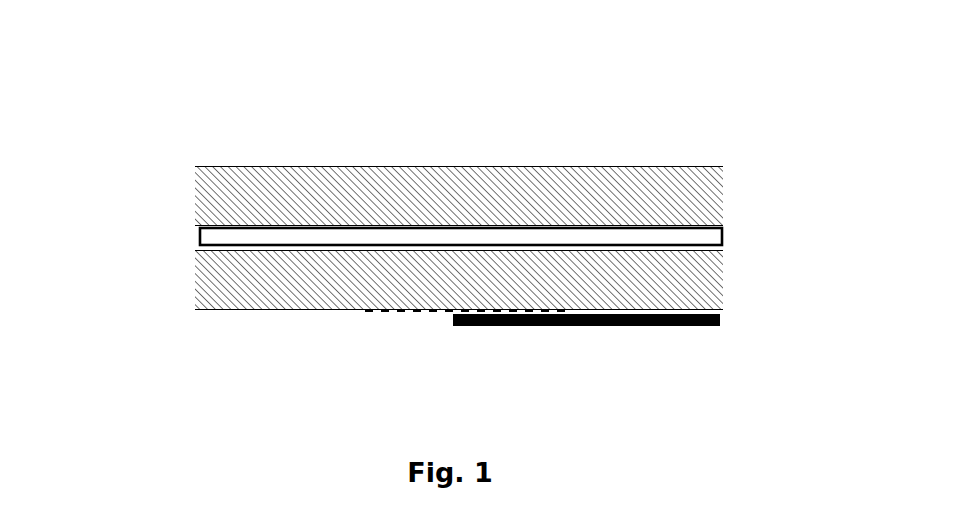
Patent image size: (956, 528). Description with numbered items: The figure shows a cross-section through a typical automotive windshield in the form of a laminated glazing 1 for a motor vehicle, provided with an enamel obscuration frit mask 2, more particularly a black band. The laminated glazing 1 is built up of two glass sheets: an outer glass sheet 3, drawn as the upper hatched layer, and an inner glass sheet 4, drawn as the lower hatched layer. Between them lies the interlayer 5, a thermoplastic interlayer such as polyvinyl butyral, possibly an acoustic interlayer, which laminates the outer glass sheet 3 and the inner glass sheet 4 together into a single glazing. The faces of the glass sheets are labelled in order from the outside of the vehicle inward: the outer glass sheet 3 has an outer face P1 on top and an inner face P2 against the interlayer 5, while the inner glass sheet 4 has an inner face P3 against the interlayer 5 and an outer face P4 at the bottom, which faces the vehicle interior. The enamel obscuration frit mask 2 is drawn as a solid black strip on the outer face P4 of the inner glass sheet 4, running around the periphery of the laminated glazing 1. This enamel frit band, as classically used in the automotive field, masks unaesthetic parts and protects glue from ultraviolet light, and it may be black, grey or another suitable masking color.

The laminated glazing 1 is at (423, 251).
The enamel obscuration frit mask 2 is at (697, 326).
The outer glass sheet 3 is at (557, 197).
The inner glass sheet 4 is at (335, 293).
The interlayer 5 is at (315, 228).
The outer face of an outer glass sheet P1 is at (652, 165).
The inner face of an outer glass sheet P2 is at (652, 217).
The inner face of an inner glass sheet P3 is at (652, 250).
The outer face of an inner glass sheet P4 is at (678, 308).